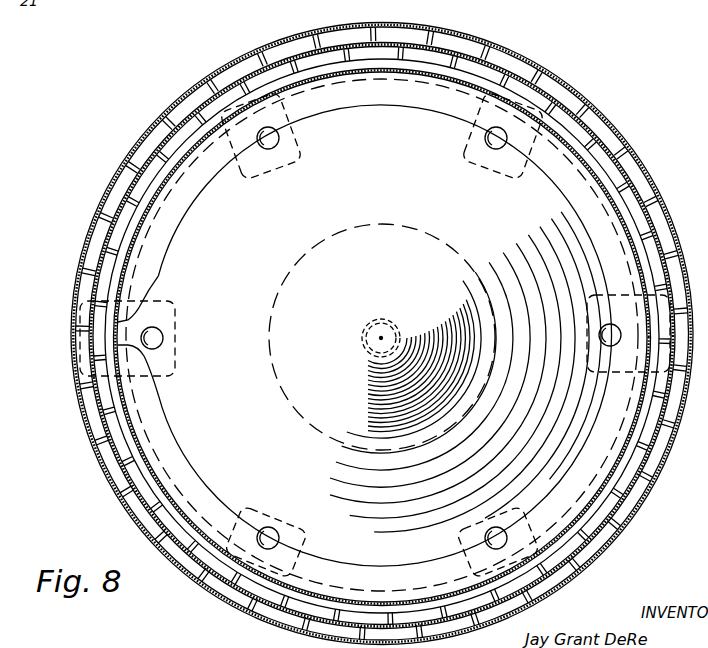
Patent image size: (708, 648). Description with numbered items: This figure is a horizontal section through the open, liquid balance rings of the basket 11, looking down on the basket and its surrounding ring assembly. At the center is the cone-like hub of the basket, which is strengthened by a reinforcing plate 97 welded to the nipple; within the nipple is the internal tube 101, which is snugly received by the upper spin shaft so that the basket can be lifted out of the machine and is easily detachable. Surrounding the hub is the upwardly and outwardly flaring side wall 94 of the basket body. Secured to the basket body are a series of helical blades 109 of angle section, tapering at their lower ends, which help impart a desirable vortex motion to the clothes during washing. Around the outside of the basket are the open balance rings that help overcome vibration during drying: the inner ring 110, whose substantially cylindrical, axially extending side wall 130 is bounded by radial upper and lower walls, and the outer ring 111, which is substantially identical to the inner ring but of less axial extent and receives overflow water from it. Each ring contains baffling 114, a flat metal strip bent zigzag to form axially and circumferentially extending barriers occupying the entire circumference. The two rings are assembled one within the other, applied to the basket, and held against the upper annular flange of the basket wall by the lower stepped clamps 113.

The basket 11 is at (634, 137).
The side wall 94 is at (198, 147).
The reinforcing plate 97 is at (286, 276).
The internal tube 101 is at (388, 318).
The helical blades 109 is at (374, 98).
The inner ring 110 is at (100, 245).
The outer ring 111 is at (78, 278).
The lower stepped clamps 113 is at (300, 165).
The baffling 114 is at (466, 45).
The side wall 130 is at (110, 198).